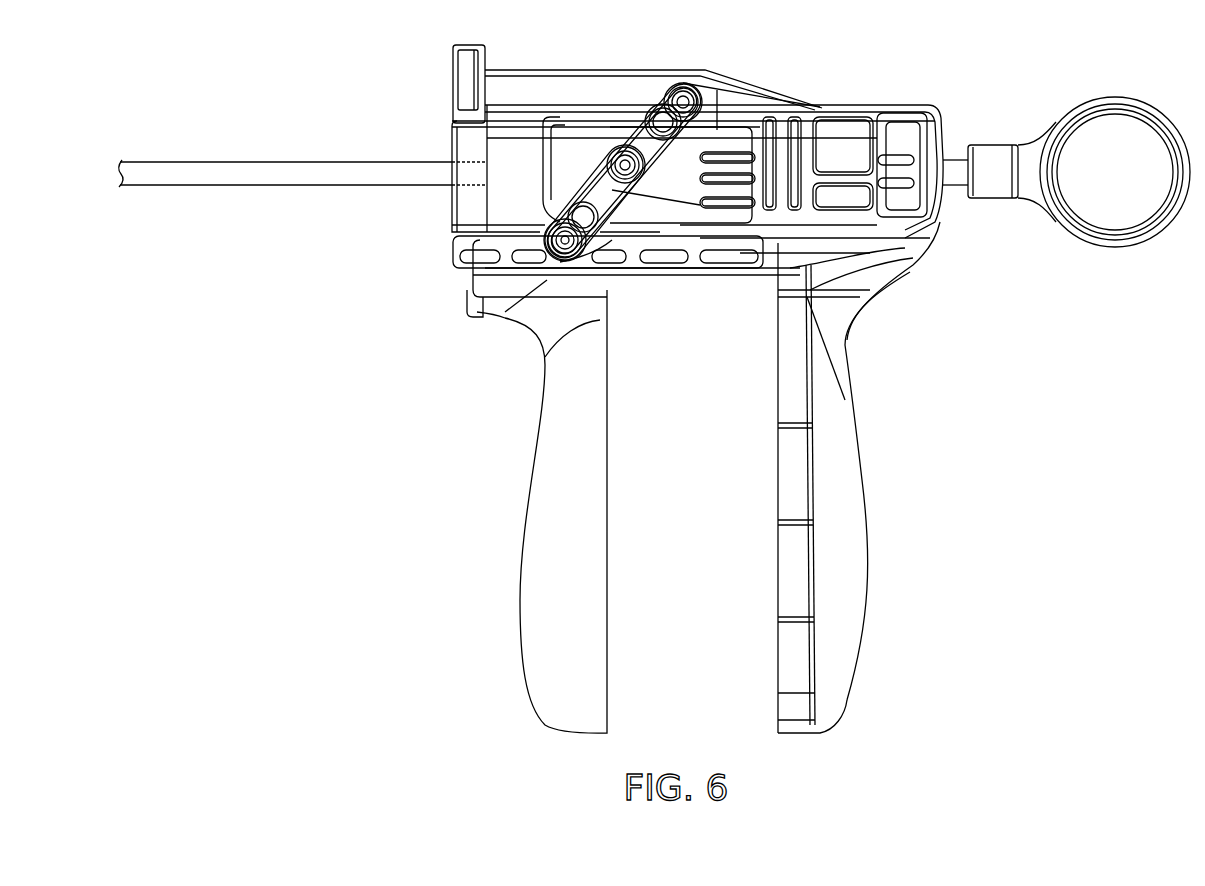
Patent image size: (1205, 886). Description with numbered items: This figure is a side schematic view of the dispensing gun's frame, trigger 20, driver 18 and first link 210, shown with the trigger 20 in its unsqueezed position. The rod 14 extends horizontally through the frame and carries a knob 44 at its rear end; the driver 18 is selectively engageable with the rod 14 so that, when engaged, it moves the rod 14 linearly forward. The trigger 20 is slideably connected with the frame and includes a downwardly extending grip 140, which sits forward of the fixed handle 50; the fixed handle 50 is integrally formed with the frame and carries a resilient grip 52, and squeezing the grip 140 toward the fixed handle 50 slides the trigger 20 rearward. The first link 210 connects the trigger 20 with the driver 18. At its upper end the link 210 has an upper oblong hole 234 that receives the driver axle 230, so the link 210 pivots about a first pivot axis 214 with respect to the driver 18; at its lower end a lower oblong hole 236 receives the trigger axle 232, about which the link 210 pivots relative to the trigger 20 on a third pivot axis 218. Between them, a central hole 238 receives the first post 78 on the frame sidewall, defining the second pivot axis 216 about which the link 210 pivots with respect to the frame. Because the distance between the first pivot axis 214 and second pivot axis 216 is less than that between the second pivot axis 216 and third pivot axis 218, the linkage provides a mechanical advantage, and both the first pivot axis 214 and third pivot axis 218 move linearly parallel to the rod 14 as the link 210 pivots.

The rod 14 is at (289, 186).
The driver 18 is at (675, 88).
The trigger 20 is at (488, 498).
The knob 44 is at (1117, 249).
The fixed handle 50 is at (812, 594).
The grip 52 is at (852, 523).
The first post 78 is at (635, 228).
The grip 140 is at (540, 580).
The first link 210 is at (628, 150).
The first pivot axis 214 is at (692, 90).
The second pivot axis 216 is at (600, 150).
The third pivot axis 218 is at (563, 258).
The driver axle 230 is at (705, 98).
The trigger axle 232 is at (548, 235).
The upper oblong hole 234 is at (662, 112).
The lower oblong hole 236 is at (600, 246).
The central hole 238 is at (645, 190).